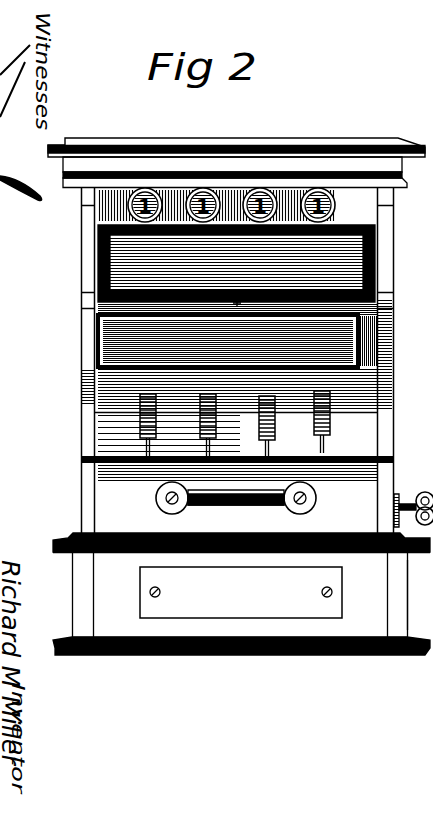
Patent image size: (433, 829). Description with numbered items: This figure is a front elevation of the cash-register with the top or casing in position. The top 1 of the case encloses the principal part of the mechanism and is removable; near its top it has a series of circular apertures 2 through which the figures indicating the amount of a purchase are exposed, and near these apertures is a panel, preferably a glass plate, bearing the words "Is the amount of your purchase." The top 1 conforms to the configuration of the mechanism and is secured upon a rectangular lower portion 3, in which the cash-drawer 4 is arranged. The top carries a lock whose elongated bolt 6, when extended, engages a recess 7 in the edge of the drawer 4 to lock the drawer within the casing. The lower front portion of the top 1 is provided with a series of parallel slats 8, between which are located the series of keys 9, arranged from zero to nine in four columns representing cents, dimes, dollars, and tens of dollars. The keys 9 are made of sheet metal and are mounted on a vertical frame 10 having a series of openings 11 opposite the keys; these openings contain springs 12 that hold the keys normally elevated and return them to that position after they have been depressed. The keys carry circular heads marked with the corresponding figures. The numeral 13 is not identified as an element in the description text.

The top of the case 1 is at (236, 325).
The circular apertures 2 is at (336, 206).
The rectangular lower portion 3 is at (241, 585).
The cash-drawer 4 is at (256, 592).
The bolt 6 is at (419, 595).
The recess 7 is at (236, 498).
The slats 8 is at (249, 423).
The keys 9 is at (281, 427).
The vertical frame 10 is at (425, 648).
The openings 11 is at (263, 265).
The springs 12 is at (397, 330).
The key 13 is at (413, 490).